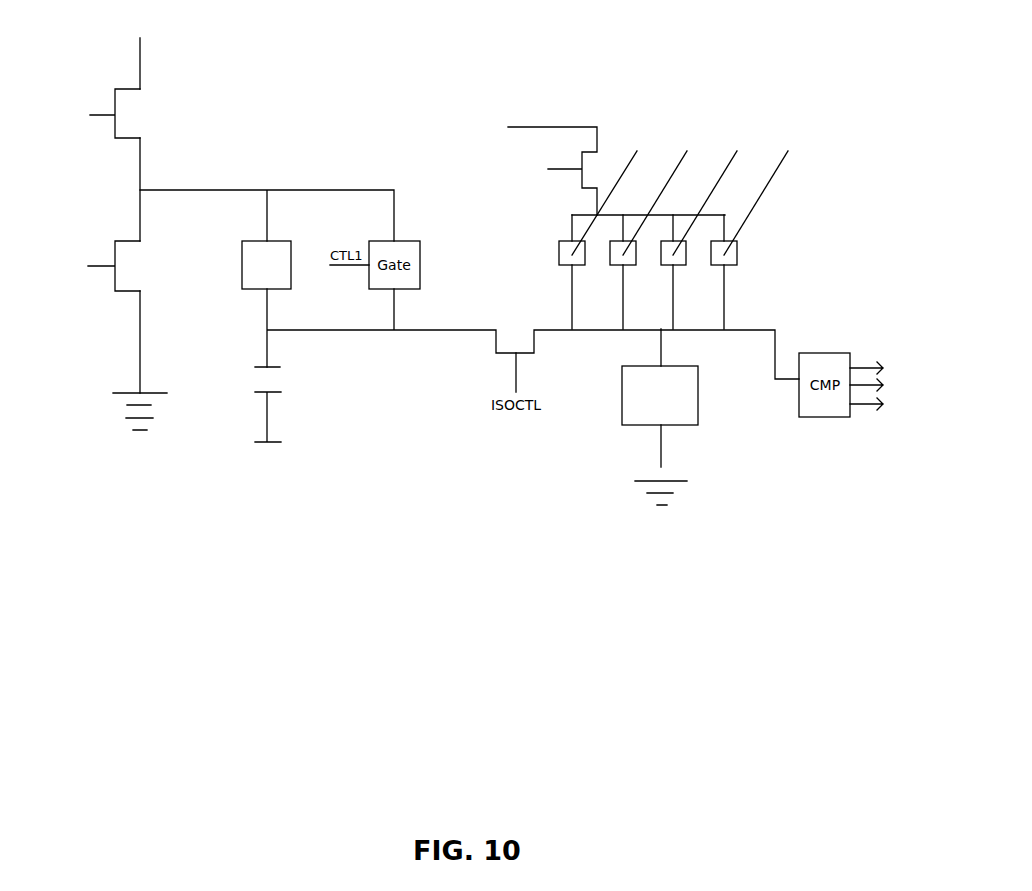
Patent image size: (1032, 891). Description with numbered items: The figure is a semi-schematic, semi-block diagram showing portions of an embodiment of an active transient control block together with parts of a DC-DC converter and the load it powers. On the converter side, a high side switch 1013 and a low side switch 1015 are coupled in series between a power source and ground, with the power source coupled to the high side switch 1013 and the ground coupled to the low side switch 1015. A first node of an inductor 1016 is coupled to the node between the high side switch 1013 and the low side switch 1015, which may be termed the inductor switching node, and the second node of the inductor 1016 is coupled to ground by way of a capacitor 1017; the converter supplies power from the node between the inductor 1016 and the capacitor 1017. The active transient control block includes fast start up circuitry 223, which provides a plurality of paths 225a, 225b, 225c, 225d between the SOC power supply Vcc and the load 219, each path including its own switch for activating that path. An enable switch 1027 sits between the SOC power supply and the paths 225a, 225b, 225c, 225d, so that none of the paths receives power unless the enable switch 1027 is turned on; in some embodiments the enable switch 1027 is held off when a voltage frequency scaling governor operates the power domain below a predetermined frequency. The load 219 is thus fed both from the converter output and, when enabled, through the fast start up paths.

The high side switch 1013 is at (113, 88).
The low side switch 1015 is at (113, 240).
The inductor 1016 is at (242, 241).
The capacitor 1017 is at (277, 365).
The enable switch 1027 is at (583, 151).
The switch array 223 is at (663, 186).
The switch 225a is at (571, 303).
The switch 225b is at (621, 303).
The switch 225c is at (672, 303).
The switch 225d is at (723, 303).
The load 219 is at (698, 418).